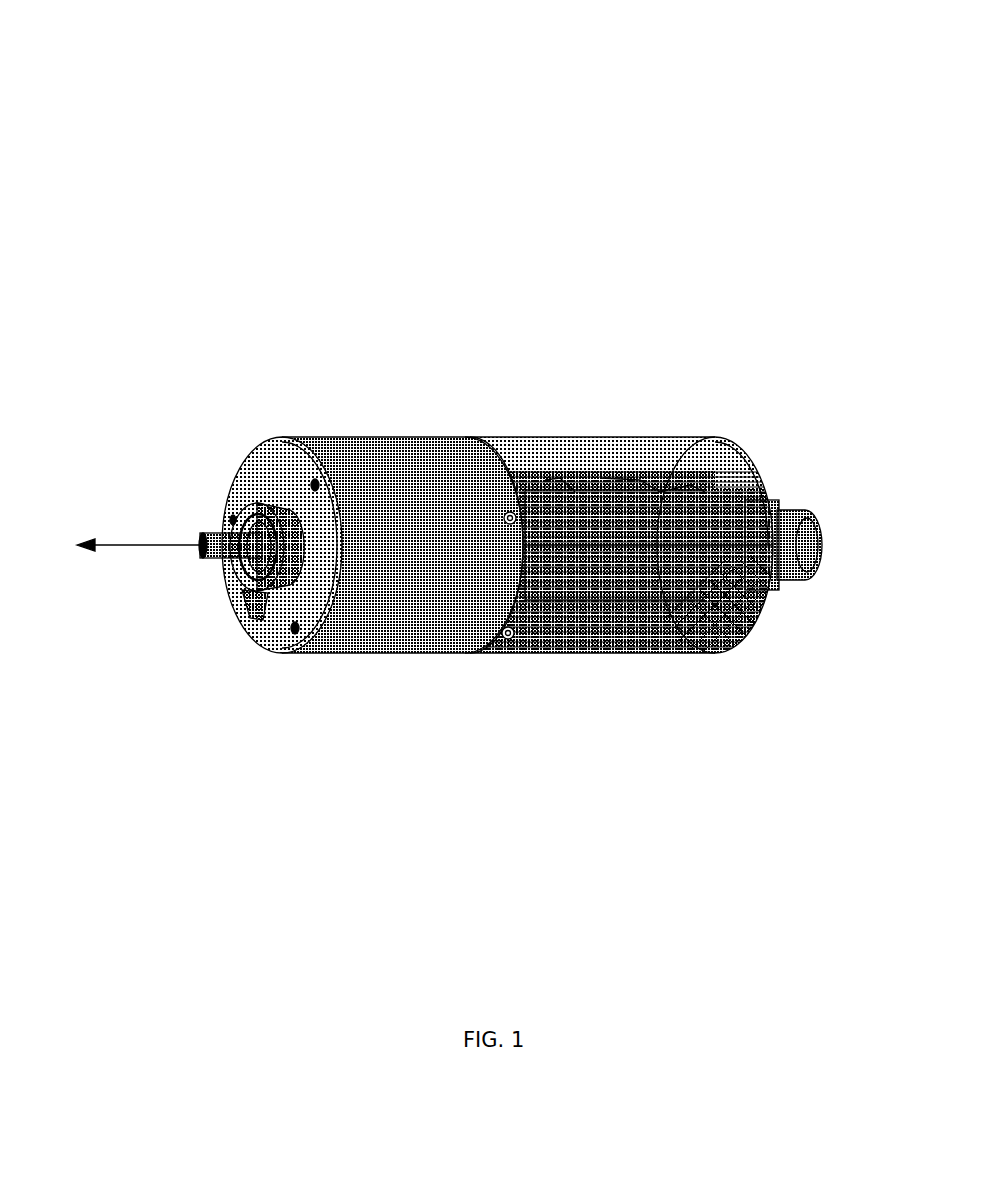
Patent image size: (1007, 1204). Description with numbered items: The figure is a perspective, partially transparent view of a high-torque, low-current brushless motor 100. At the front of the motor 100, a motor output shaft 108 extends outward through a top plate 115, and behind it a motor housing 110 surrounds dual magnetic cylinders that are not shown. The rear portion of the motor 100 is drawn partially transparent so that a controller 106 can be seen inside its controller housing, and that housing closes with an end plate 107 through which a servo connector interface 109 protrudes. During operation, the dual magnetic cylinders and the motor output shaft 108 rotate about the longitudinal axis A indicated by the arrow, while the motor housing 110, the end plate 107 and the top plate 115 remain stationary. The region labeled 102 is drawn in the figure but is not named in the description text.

The brushless motor 100 is at (473, 365).
The stator 102 is at (628, 620).
The controller 106 is at (578, 476).
The end plate 107 is at (784, 607).
The motor output shaft 108 is at (233, 552).
The servo connector interface 109 is at (797, 543).
The motor housing 110 is at (400, 615).
The top plate 115 is at (260, 475).